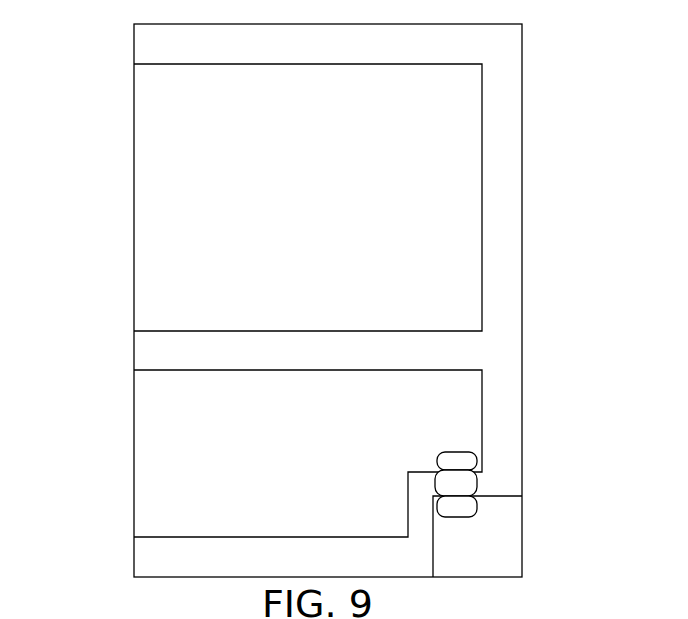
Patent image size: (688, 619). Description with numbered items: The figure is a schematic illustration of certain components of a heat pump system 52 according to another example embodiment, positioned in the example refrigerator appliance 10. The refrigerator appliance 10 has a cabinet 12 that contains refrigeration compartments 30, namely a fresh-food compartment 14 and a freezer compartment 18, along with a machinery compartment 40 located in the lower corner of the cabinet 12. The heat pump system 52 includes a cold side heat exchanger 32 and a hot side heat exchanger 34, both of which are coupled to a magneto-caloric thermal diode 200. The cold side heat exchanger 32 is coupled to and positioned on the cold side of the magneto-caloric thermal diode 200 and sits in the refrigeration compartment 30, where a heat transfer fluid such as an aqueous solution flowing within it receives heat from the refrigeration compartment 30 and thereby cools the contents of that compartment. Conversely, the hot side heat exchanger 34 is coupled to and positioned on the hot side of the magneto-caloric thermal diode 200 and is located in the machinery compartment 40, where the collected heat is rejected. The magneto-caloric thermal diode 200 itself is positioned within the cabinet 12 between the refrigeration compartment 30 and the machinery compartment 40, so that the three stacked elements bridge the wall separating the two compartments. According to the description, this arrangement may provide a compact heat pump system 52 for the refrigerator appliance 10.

The refrigerator appliance 10 is at (100, 88).
The cabinet 12 is at (508, 162).
The fresh-food compartment 14 is at (163, 200).
The freezer compartment 18 is at (164, 447).
The refrigeration compartment 30 is at (456, 386).
The cold side heat exchanger 32 is at (458, 462).
The hot side heat exchanger 34 is at (458, 508).
The machinery compartment 40 is at (500, 553).
The heat pump system 52 is at (494, 482).
The magneto-caloric thermal diode 200 is at (452, 483).